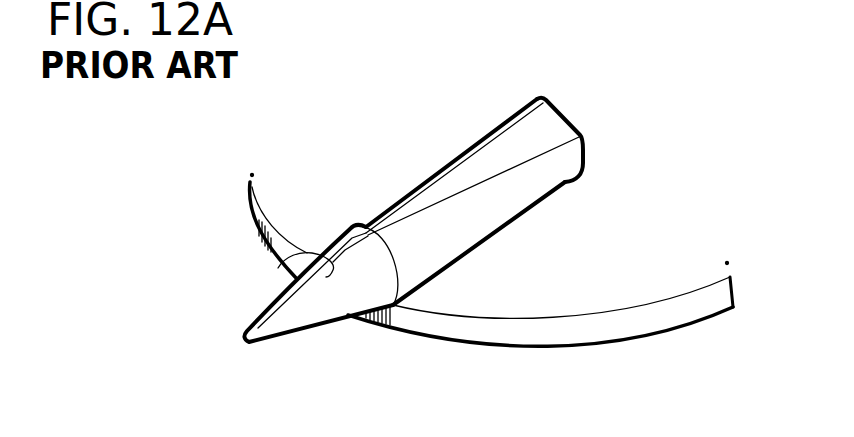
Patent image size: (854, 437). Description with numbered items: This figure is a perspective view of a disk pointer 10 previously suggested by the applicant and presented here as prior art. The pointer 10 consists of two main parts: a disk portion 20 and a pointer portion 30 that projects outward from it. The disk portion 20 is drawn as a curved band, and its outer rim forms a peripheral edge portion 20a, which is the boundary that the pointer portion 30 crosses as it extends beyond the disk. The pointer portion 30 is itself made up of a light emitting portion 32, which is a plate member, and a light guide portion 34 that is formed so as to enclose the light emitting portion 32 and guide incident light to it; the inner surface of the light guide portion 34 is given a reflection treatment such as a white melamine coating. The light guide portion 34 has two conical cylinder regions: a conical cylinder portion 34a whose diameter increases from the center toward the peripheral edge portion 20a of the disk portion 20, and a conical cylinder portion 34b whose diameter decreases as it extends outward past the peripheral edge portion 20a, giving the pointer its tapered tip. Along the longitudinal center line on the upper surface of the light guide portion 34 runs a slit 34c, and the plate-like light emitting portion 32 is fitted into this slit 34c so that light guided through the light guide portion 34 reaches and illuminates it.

The disk pointer 10 is at (363, 126).
The disk portion 20 is at (650, 290).
The peripheral edge portion 20a is at (560, 335).
The pointer portion 30 is at (478, 103).
The light emitting portion 32 is at (533, 138).
The light guide portion 34 is at (497, 242).
The conical cylinder portion 34a is at (545, 181).
The conical cylinder portion 34b is at (307, 316).
The slit 34c is at (277, 266).